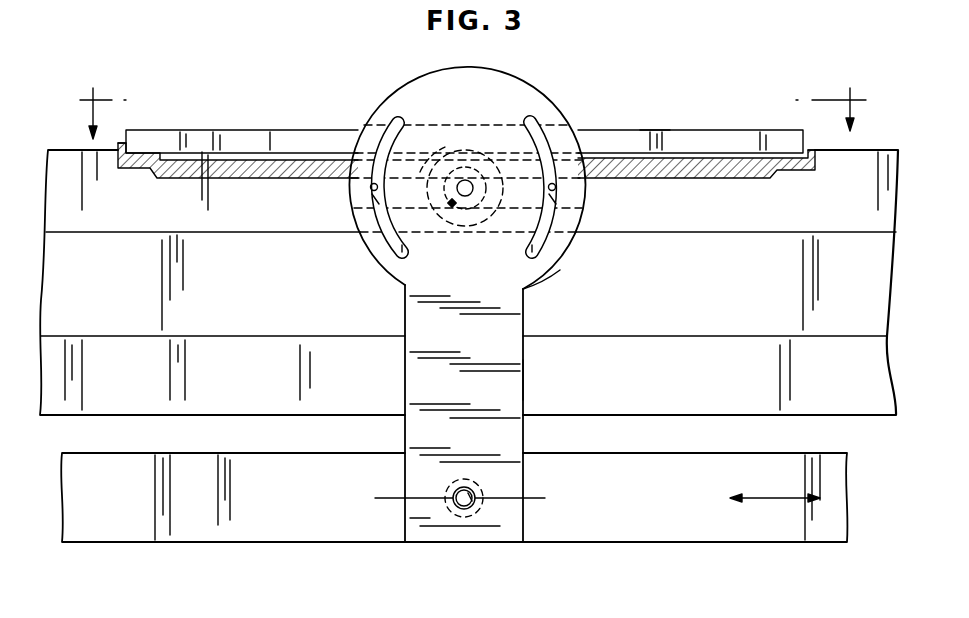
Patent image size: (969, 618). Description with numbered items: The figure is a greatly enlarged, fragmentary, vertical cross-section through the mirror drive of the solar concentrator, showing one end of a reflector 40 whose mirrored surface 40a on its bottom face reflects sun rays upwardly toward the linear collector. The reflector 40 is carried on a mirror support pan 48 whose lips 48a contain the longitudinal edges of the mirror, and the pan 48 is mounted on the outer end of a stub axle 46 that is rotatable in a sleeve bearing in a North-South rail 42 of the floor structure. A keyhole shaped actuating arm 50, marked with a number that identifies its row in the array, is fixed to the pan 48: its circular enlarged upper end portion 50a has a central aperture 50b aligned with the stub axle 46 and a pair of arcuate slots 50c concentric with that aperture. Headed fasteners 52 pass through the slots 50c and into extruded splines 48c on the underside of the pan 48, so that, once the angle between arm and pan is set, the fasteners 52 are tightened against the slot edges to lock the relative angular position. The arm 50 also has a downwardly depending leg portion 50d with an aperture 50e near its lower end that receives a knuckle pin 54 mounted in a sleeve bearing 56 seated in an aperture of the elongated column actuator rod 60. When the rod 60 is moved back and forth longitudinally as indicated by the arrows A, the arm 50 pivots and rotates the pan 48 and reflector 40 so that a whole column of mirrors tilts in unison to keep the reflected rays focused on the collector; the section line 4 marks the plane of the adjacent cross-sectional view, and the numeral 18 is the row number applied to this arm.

The section line 4- 4 is at (473, 100).
The adjustable disk 18 is at (467, 178).
The reflector 40 is at (609, 124).
The reflective mirrored surface 40a is at (650, 156).
The rail 42 is at (720, 293).
The stub axle 46 is at (462, 192).
The mirror support pan 48 is at (670, 178).
The lip 48a is at (119, 143).
The extruded spline 48c is at (368, 189).
The actuating arm 50 is at (425, 323).
The enlarged upper end portion 50a is at (556, 285).
The central aperture 50b is at (460, 196).
The arcuate slot 50c is at (388, 242).
The leg portion 50d is at (524, 380).
The aperture 50e is at (480, 507).
The headed fastener 52 is at (375, 187).
The knuckle pin 54 is at (460, 500).
The sleeve bearing 56 is at (478, 492).
The column actuator rod 60 is at (596, 546).
The arrows A is at (772, 502).